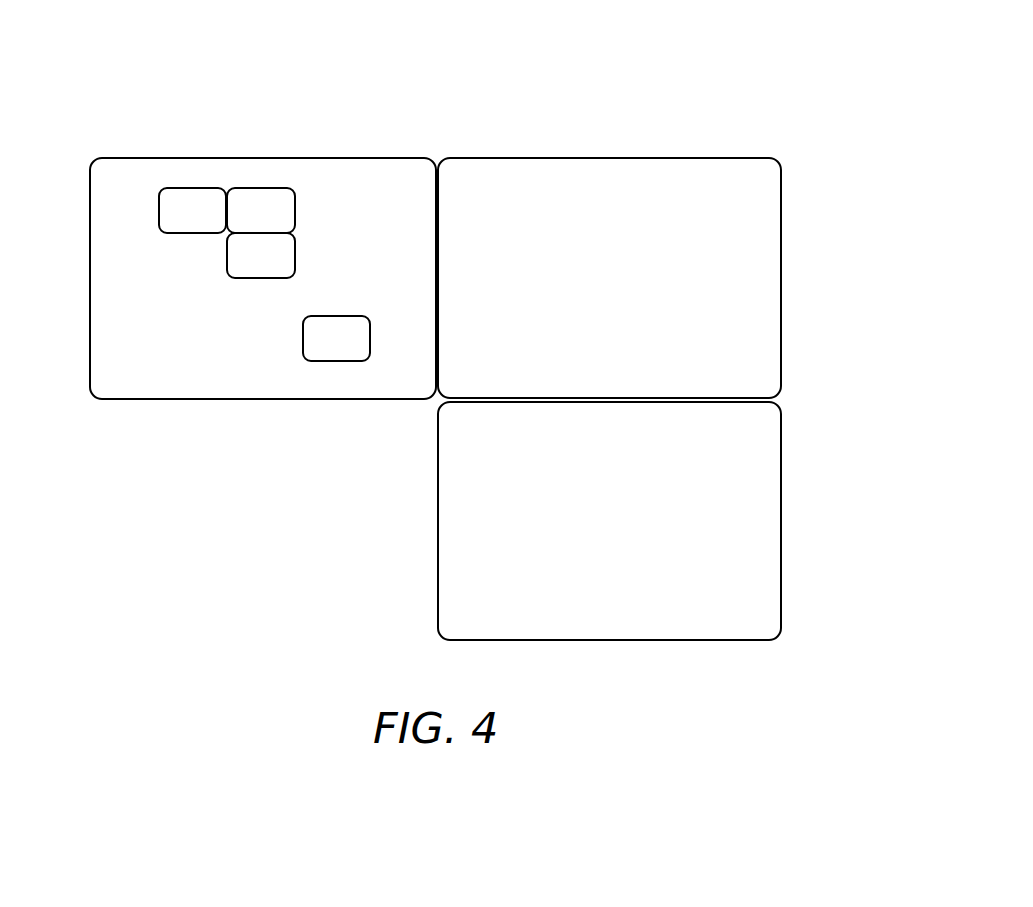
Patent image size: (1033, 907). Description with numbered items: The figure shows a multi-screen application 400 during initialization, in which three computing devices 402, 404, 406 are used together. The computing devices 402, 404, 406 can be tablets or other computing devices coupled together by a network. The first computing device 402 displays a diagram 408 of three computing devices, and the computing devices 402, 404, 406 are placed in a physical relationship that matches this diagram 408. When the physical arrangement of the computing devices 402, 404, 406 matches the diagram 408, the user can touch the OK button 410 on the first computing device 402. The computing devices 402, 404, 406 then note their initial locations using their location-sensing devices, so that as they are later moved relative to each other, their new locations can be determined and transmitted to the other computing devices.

The multi-screen application 400 is at (823, 61).
The first computing device 402 is at (90, 220).
The computing device 404 is at (781, 278).
The computing device 406 is at (781, 518).
The diagram 408 is at (296, 211).
The OK button 410 is at (303, 338).